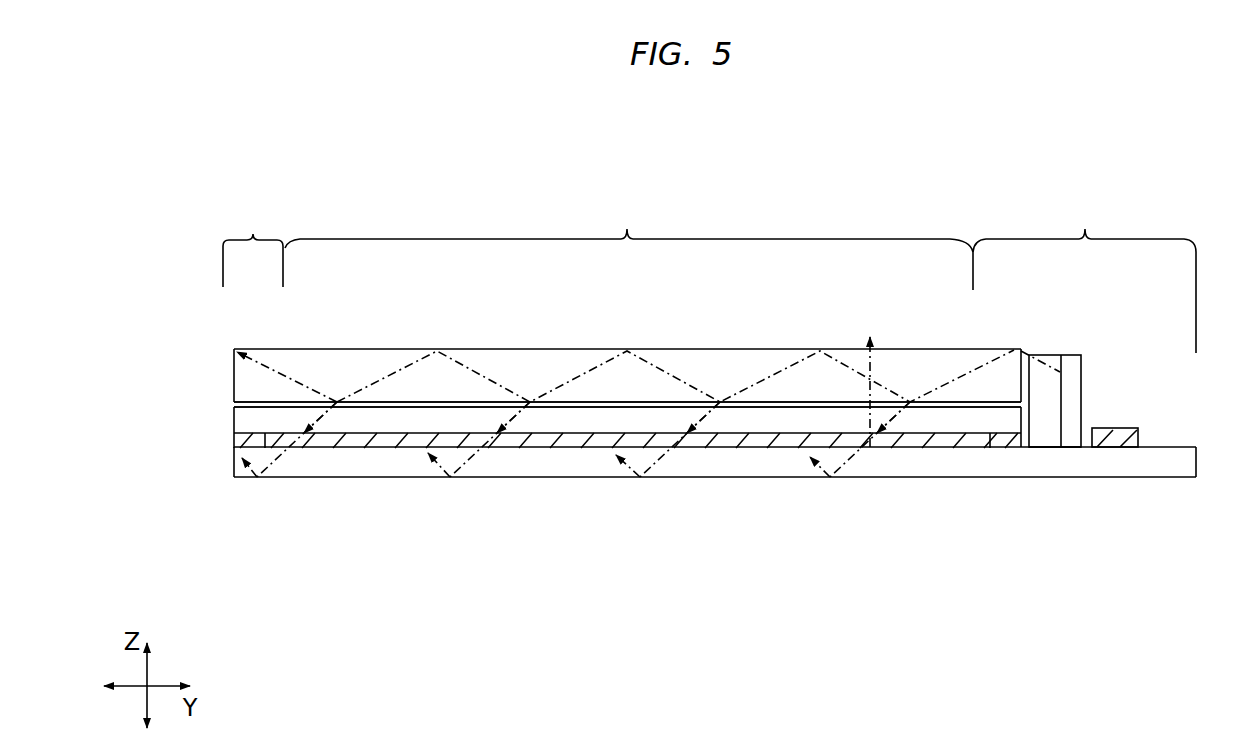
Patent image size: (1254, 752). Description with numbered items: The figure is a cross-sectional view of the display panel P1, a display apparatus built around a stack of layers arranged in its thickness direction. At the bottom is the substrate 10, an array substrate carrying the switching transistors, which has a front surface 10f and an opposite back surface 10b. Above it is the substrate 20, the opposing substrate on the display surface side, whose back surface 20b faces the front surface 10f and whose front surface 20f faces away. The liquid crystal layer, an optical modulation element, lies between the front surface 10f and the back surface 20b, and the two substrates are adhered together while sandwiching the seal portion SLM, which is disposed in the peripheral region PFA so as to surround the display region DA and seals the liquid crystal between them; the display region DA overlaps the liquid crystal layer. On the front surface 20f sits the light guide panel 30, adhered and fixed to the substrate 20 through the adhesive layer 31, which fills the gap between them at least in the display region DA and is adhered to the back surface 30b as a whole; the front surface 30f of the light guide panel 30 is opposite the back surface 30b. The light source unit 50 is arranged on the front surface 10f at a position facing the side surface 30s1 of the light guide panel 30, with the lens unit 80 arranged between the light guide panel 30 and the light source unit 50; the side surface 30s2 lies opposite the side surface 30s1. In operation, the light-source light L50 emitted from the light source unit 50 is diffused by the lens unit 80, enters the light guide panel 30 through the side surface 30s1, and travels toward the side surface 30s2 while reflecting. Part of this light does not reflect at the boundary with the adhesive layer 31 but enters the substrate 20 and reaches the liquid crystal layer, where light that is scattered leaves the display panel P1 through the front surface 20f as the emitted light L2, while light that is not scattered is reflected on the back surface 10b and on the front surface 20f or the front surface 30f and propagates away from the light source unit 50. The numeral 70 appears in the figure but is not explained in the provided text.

The display panel P1 is at (676, 380).
The peripheral region PFA is at (709, 276).
The display region DA is at (629, 226).
The light guide panel 30 is at (628, 342).
The front surface of the light guide panel 30f is at (523, 349).
The back surface of the light guide panel 30b is at (395, 407).
The side surface of the light guide panel 30s1 is at (1023, 392).
The side surface of the light guide panel 30s2 is at (233, 356).
The adhesive layer 31 is at (760, 405).
The substrate 20 is at (601, 365).
The front surface of the substrate 20 20f is at (437, 402).
The back surface of the substrate 20 20b is at (652, 446).
The seal portion SLM is at (234, 440).
The substrate 10 is at (684, 525).
The front surface of the substrate 10 10f is at (554, 446).
The back surface of the substrate 10 10b is at (808, 479).
The light source unit 50 is at (1068, 382).
The driver chip 70 is at (1133, 430).
The lens unit 80 is at (1050, 440).
The emitted light L2 is at (867, 398).
The light-source light L50 is at (933, 387).